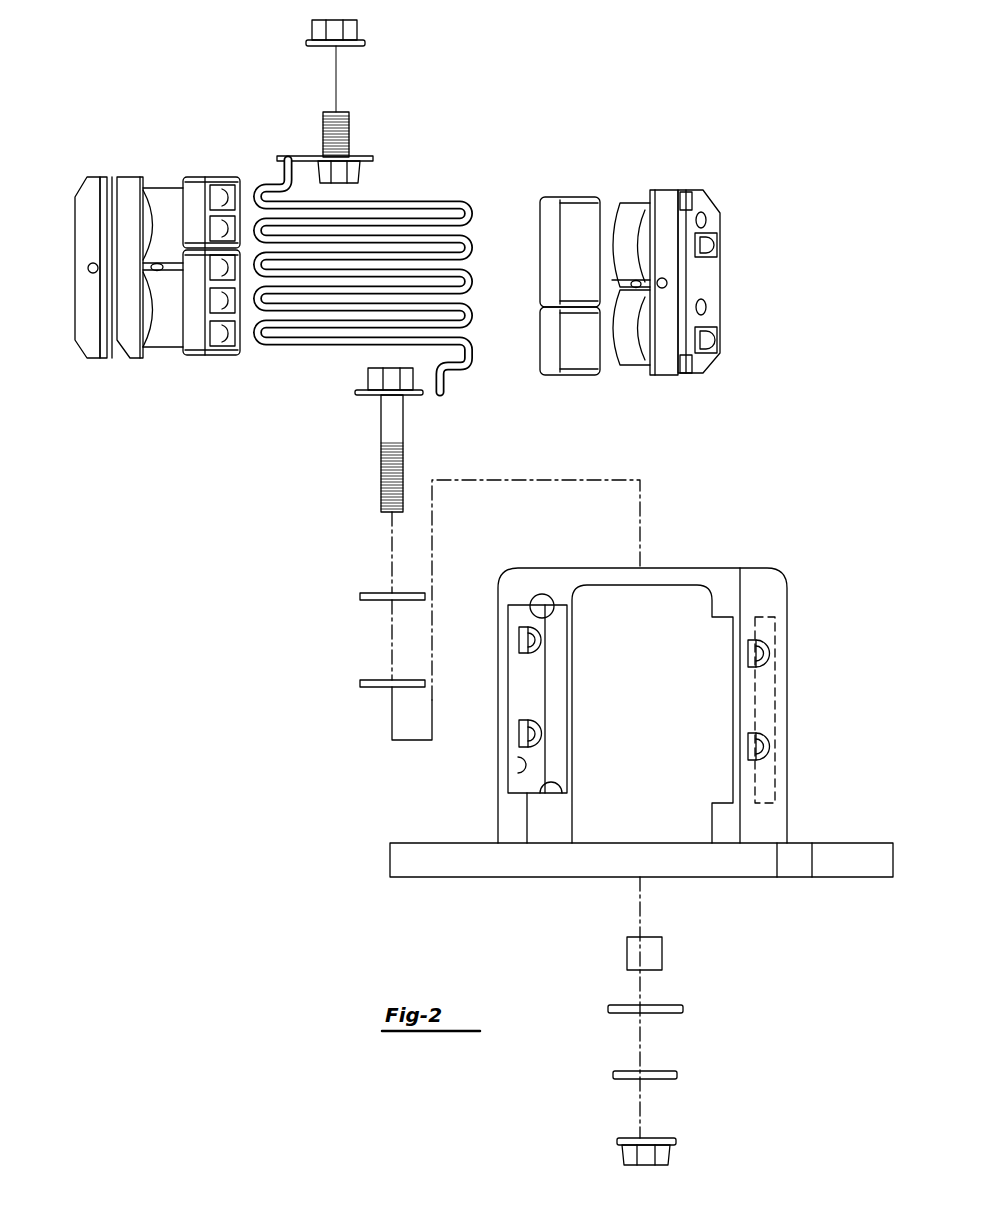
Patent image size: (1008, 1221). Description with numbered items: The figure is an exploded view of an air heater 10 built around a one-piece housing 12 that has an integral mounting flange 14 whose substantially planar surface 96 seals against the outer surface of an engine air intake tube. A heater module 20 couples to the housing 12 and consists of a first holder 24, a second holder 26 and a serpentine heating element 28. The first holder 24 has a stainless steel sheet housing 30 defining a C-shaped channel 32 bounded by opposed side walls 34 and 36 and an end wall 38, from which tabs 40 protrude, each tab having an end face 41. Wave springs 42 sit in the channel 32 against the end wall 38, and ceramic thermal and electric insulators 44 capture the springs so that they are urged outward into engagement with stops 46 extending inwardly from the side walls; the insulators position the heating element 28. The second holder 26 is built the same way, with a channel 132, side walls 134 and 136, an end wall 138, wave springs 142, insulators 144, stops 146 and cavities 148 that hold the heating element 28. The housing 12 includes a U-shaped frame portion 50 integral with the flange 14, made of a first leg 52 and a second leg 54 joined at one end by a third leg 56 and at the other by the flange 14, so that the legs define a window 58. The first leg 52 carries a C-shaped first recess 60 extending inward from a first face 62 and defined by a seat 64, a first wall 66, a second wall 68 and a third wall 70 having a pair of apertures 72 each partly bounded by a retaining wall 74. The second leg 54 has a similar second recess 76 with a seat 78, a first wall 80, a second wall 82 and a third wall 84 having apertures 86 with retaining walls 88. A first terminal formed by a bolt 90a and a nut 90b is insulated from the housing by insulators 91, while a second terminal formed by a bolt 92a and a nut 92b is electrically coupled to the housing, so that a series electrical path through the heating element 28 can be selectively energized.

The air heater 10 is at (706, 86).
The one-piece housing 12 is at (774, 545).
The mounting flange 14 is at (728, 865).
The heater module 20 is at (541, 93).
The first holder 24 is at (732, 292).
The second holder 26 is at (90, 378).
The serpentine heating element 28 is at (345, 350).
The housing 30 is at (718, 215).
The channel 32 is at (682, 383).
The side wall 34 is at (655, 368).
The side wall 36 is at (716, 362).
The end wall 38 is at (705, 278).
The tab 40 is at (716, 250).
The end face 41 is at (718, 233).
The wave spring 42 is at (630, 205).
The thermal and electric insulator 44 is at (575, 212).
The stop 46 is at (683, 193).
The frame portion 50 is at (788, 697).
The first leg 52 is at (772, 816).
The second leg 54 is at (512, 812).
The third leg 56 is at (668, 582).
The window 58 is at (641, 697).
The first recess 60 is at (720, 710).
The first face 62 is at (512, 580).
The seat 64 is at (783, 675).
The first wall 66 is at (725, 620).
The second wall 68 is at (715, 805).
The third wall 70 is at (733, 730).
The aperture 72 is at (770, 652).
The retaining wall 74 is at (750, 660).
The second recess 76 is at (545, 680).
The seat 78 is at (555, 757).
The first wall 80 is at (548, 605).
The second wall 82 is at (552, 790).
The third wall 84 is at (520, 770).
The aperture 86 is at (540, 636).
The retaining wall 88 is at (518, 641).
The bolt 90a is at (388, 420).
The nut 90b is at (665, 1153).
The insulator 91 is at (658, 957).
The bolt 92a is at (346, 133).
The nut 92b is at (340, 29).
The planar surface 96 is at (815, 842).
The channel 132 is at (126, 378).
The side wall 134 is at (85, 335).
The side wall 136 is at (130, 195).
The end wall 138 is at (77, 210).
The wave spring 142 is at (168, 335).
The insulator 144 is at (212, 178).
The stop 146 is at (108, 180).
The cavity 148 is at (240, 340).